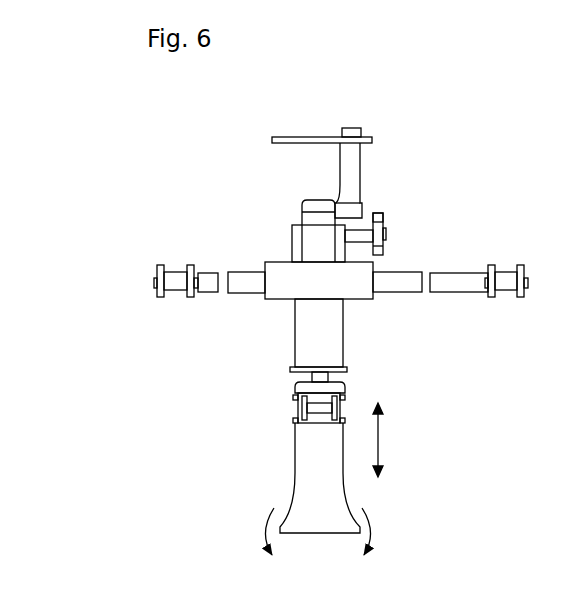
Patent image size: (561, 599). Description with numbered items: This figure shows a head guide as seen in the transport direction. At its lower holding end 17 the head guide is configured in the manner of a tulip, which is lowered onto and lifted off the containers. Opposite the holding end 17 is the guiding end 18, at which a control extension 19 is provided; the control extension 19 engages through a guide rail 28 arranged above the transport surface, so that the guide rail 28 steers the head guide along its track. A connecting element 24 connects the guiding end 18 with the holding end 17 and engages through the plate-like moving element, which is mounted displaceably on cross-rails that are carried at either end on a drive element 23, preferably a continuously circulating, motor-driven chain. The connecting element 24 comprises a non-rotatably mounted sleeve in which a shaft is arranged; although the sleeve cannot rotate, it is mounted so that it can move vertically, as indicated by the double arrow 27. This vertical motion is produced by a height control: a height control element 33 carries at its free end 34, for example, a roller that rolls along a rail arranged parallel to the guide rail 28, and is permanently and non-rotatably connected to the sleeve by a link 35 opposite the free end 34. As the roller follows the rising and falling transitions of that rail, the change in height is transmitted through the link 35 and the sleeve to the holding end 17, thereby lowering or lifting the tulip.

The holding end 17 is at (150, 487).
The guiding end 18 is at (70, 222).
The control extension 19 is at (353, 177).
The drive element 23 is at (142, 286).
The connecting element 24 is at (297, 340).
The double arrow 27 is at (399, 440).
The guide rail 28 is at (272, 133).
The height control element 33 is at (388, 228).
The free end 34 is at (388, 215).
The link 35 is at (358, 225).